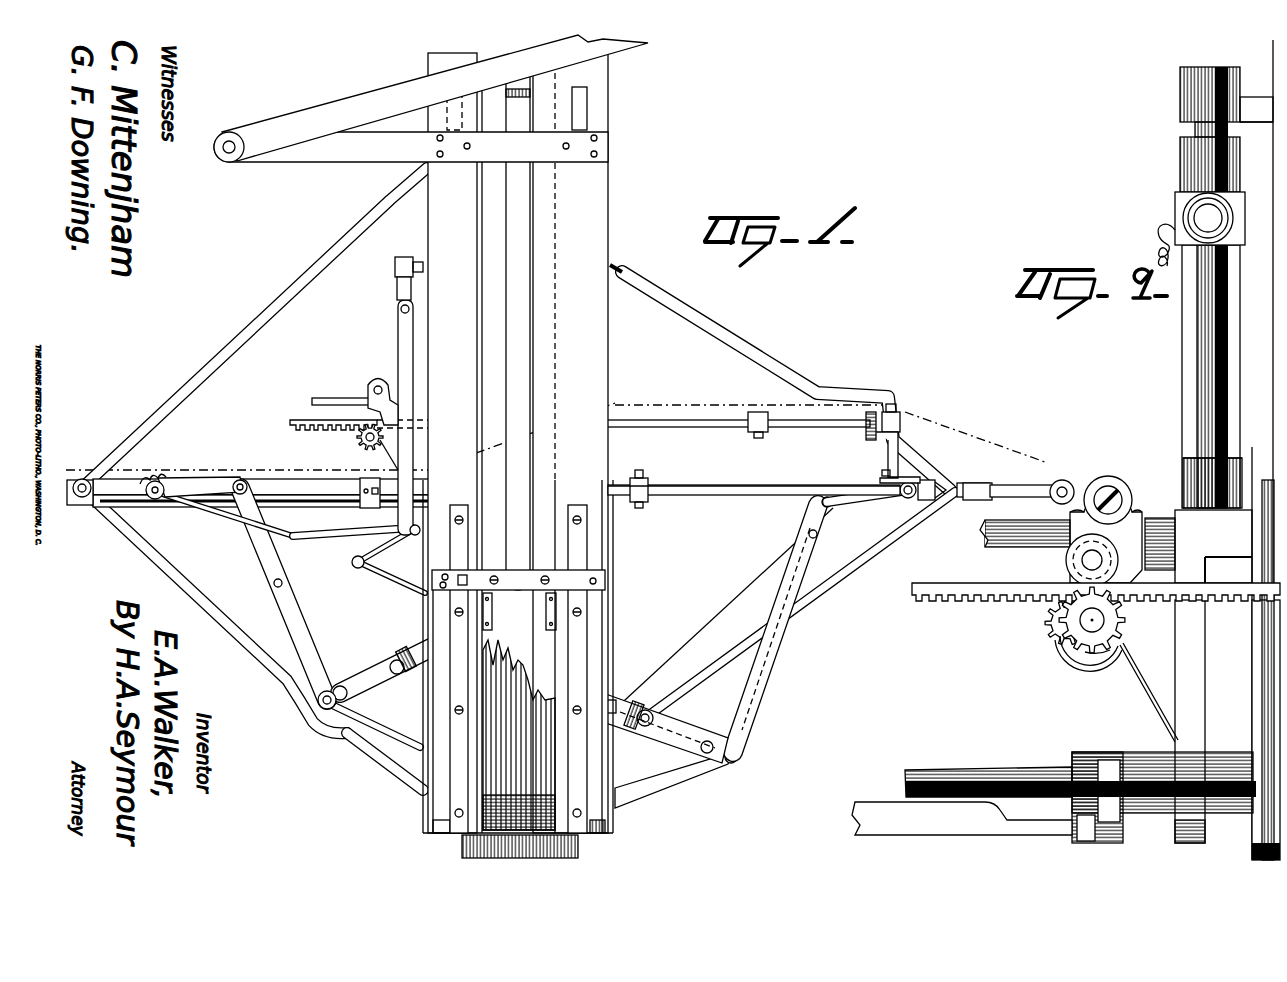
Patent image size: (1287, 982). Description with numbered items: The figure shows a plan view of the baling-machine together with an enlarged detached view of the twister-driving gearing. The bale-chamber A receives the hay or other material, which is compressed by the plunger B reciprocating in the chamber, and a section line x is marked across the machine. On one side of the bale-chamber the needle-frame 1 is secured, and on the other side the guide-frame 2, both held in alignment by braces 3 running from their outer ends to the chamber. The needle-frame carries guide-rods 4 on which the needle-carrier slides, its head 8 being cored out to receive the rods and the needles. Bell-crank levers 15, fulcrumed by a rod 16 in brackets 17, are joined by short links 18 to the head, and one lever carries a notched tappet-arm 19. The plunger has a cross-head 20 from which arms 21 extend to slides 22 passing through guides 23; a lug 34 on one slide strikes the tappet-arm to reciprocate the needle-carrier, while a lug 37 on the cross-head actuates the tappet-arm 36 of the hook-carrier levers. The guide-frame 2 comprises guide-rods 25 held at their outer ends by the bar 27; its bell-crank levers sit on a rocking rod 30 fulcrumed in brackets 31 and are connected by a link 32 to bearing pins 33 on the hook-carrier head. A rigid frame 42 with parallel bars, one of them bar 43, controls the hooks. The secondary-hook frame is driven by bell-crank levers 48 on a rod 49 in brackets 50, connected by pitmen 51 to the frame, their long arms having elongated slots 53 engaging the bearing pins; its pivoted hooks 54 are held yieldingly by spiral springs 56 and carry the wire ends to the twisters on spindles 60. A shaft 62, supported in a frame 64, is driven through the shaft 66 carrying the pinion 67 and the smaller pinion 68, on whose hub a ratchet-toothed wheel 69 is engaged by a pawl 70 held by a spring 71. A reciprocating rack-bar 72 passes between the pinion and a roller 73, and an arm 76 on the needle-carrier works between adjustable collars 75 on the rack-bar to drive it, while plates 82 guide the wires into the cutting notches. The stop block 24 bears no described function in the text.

In FIG. 1, the bale-chamber A is at (605, 366).
In FIG. 1, the plunger B is at (519, 735).
In FIG. 1, the section line x is at (556, 441).
In FIG. 1, the needle-frame 1 is at (754, 476).
In FIG. 1, the guide-frame 2 is at (262, 478).
In FIG. 1, the braces 3 is at (122, 520).
In FIG. 1, the guide-rods 4 is at (726, 496).
In FIG. 1, the head 8 is at (908, 478).
In FIG. 1, the bell-crank levers 15 is at (768, 662).
In FIG. 1, the rod 16 is at (748, 756).
In FIG. 1, the brackets 17 is at (675, 786).
In FIG. 1, the short links 18 is at (868, 500).
In FIG. 1, the tappet-arm 19 is at (632, 704).
In FIG. 1, the cross-head 20 is at (530, 590).
In FIG. 1, the arms 21 is at (446, 590).
In FIG. 1, the slides 22 is at (596, 648).
In FIG. 1, the guides 23 is at (420, 793).
In FIG. 1, the stop block 24 is at (590, 686).
In FIG. 1, the guide-rods 25 is at (346, 484).
In FIG. 9, the guide-rods 25 is at (1032, 754).
In FIG. 1, the bar 27 is at (82, 500).
In FIG. 1, the rocking rod 30 is at (322, 710).
In FIG. 1, the brackets 31 is at (396, 728).
In FIG. 1, the link 32 is at (196, 482).
In FIG. 1, the bearing pins 33 is at (154, 500).
In FIG. 1, the lug 34 is at (288, 581).
In FIG. 1, the tappet-arm 36 is at (393, 660).
In FIG. 1, the lug 37 is at (462, 575).
In FIG. 1, the rigid frame 42 is at (367, 505).
In FIG. 1, the bar 43 is at (338, 507).
In FIG. 9, the bar 43 is at (962, 818).
In FIG. 1, the bell-crank levers 48 is at (352, 539).
In FIG. 1, the rod 49 is at (359, 570).
In FIG. 1, the brackets 50 is at (410, 545).
In FIG. 1, the pitmen 51 is at (408, 522).
In FIG. 1, the elongated slots 53 is at (232, 521).
In FIG. 9, the pivoted hooks 54 is at (1182, 382).
In FIG. 9, the spiral springs 56 is at (1160, 247).
In FIG. 9, the spindles 60 is at (1172, 556).
In FIG. 9, the shaft 62 is at (1070, 563).
In FIG. 9, the frame 64 is at (1128, 505).
In FIG. 9, the shaft 66 is at (1118, 622).
In FIG. 1, the pinion 67 is at (364, 445).
In FIG. 9, the pinion 67 is at (1060, 648).
In FIG. 9, the smaller pinion 68 is at (1112, 628).
In FIG. 9, the ratchet-toothed wheel 69 is at (1094, 656).
In FIG. 9, the pawl 70 is at (1056, 640).
In FIG. 9, the spring 71 is at (1128, 650).
In FIG. 1, the rack-bar 72 is at (668, 427).
In FIG. 9, the roller 73 is at (1112, 548).
In FIG. 1, the adjustable collars 75 is at (800, 436).
In FIG. 1, the arm 76 is at (880, 447).
In FIG. 1, the plates 82 is at (382, 426).